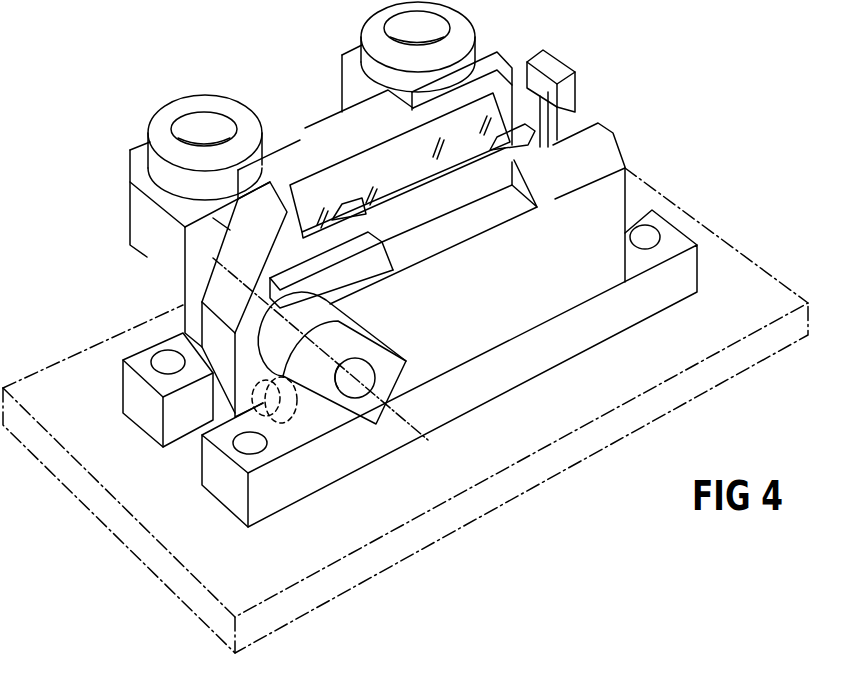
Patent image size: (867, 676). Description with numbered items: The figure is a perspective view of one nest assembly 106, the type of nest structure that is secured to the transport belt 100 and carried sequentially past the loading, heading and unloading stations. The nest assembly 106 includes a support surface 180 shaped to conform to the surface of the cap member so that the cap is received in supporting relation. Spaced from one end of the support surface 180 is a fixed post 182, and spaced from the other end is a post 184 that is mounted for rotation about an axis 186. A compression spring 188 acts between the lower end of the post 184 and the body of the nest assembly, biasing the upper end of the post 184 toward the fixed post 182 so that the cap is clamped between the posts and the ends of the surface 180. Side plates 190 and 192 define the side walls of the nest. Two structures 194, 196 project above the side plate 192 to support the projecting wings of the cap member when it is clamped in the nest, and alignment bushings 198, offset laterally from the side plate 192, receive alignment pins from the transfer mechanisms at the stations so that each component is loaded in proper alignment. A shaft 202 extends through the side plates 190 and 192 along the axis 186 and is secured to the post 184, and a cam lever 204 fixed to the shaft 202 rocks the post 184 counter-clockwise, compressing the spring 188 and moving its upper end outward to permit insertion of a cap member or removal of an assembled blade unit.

The transport belt 100 is at (742, 242).
The nest assembly 106 is at (618, 137).
The support surface 180 is at (411, 169).
The fixed post 182 is at (548, 63).
The post 184 is at (238, 253).
The axis 186 is at (430, 443).
The compression spring 188 is at (340, 438).
The side plate 190 is at (587, 351).
The side plate 192 is at (186, 254).
The wing support structure 194 is at (285, 160).
The wing support structure 196 is at (492, 57).
The alignment bushing 198 is at (200, 107).
The shaft 202 is at (363, 370).
The cam lever 204 is at (348, 321).